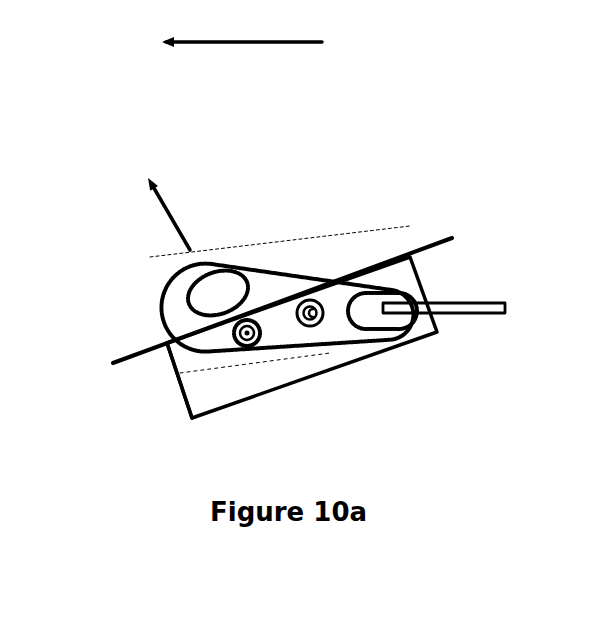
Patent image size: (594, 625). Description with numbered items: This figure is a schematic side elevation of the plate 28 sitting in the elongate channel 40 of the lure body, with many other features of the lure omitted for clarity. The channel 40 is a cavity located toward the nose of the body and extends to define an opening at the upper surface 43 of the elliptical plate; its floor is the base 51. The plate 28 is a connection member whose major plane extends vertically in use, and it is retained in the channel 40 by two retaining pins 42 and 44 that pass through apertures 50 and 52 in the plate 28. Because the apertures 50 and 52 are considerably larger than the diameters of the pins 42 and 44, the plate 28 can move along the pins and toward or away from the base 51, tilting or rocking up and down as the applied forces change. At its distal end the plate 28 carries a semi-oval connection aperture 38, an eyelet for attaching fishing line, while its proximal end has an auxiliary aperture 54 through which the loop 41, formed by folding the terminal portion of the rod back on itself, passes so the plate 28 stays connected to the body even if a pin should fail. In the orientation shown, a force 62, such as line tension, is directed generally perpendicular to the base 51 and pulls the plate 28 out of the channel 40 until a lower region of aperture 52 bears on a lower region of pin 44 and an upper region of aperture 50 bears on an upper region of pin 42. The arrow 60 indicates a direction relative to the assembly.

The plate 28 is at (220, 224).
The connection aperture 38 is at (208, 295).
The elongate channel 40 is at (160, 368).
The loop 41 is at (468, 301).
The pin 42 is at (312, 306).
The upper surface 43 is at (433, 243).
The pin 44 is at (247, 340).
The aperture 50 is at (305, 346).
The base 51 is at (385, 343).
The aperture 52 is at (258, 300).
The auxiliary aperture 54 is at (389, 322).
The direction arrow 60 is at (266, 43).
The force 62 is at (155, 193).